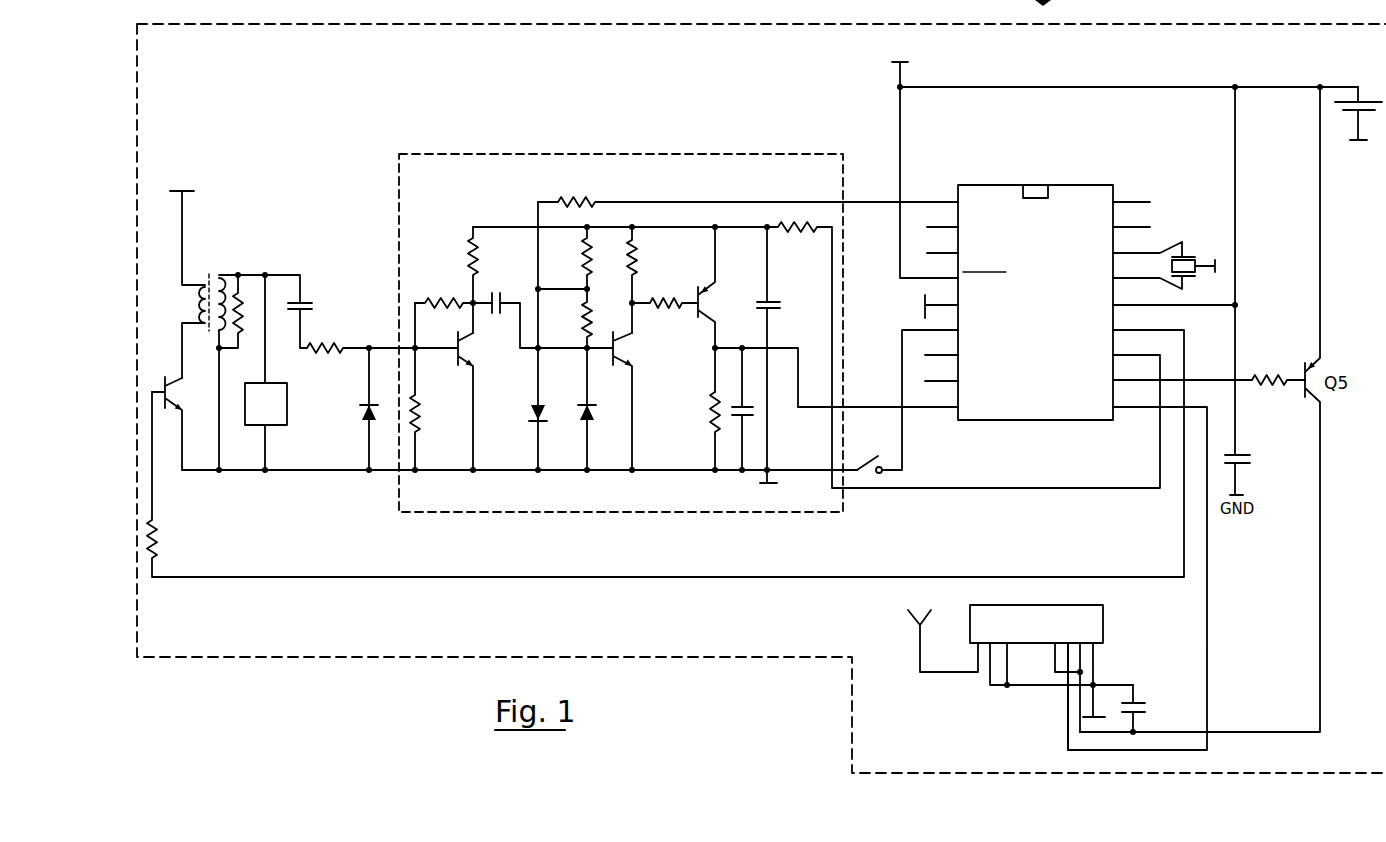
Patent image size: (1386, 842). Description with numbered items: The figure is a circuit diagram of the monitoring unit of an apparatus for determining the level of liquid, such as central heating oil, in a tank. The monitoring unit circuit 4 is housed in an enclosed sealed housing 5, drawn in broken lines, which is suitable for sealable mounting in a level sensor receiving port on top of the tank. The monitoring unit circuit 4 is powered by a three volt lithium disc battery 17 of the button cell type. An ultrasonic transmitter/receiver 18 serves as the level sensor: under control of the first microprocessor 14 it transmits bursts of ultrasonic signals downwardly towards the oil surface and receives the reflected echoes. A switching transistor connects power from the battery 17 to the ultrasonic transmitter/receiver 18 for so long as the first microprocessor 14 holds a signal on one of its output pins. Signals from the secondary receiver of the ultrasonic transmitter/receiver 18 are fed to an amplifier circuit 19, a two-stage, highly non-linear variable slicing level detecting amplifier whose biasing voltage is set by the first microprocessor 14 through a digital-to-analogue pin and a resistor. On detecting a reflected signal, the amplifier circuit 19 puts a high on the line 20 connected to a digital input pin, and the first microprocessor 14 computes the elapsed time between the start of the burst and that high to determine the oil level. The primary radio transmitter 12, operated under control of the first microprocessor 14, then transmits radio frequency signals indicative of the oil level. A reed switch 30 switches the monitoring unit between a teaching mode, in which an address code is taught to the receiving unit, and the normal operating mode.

The monitoring unit circuit 4 is at (298, 124).
The sealed housing 5 is at (300, 658).
The primary radio transmitter 12 is at (1105, 626).
The first microprocessor 14 is at (1045, 422).
The lithium disc battery 17 is at (1375, 93).
The ultrasonic transmitter/receiver 18 is at (296, 379).
The amplifier circuit 19 is at (600, 153).
The line 20 is at (925, 408).
The reed switch 30 is at (870, 458).